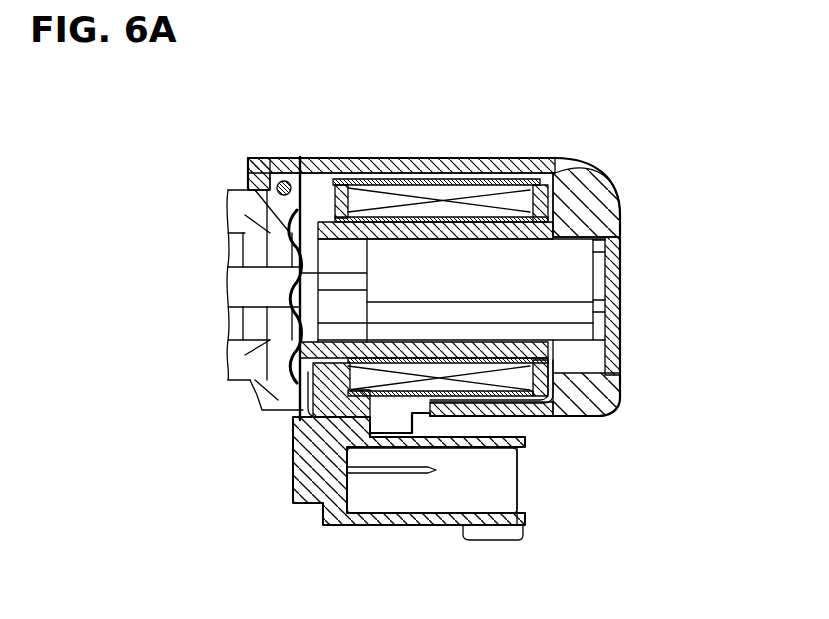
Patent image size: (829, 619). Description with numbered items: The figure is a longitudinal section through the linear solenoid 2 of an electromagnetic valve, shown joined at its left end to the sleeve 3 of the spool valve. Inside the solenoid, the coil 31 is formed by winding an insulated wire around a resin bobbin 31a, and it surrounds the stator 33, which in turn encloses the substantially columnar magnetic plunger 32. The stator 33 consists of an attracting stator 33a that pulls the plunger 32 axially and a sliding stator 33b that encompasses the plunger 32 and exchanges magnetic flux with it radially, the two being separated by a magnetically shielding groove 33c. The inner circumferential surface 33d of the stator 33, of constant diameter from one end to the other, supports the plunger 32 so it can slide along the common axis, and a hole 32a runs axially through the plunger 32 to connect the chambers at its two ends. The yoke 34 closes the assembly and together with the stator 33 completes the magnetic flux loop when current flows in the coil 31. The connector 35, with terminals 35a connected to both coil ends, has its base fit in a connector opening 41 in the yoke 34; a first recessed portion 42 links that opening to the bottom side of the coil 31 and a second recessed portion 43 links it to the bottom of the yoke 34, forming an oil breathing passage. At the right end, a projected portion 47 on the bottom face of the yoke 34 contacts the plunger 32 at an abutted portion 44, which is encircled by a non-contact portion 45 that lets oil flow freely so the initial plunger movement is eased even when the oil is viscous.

The linear solenoid 2 is at (600, 450).
The sleeve 3 is at (250, 205).
The coil 31 is at (515, 195).
The resin bobbin 31a is at (568, 167).
The plunger 32 is at (567, 257).
The hole 32a is at (583, 323).
The stator 33 is at (503, 110).
The attracting stator 33a is at (318, 172).
The sliding stator 33b is at (460, 228).
The magnetically shielding groove 33c is at (378, 185).
The inner circumferential surface 33d is at (595, 212).
The yoke 34 is at (600, 183).
The connector 35 is at (535, 512).
The terminals 35a is at (407, 477).
The connector opening 41 is at (420, 402).
The first recessed portion 42 is at (530, 403).
The second recessed portion 43 is at (610, 410).
The abutted portion 44 is at (613, 297).
The non-contact portion 45 is at (613, 253).
The projected portion 47 is at (617, 277).